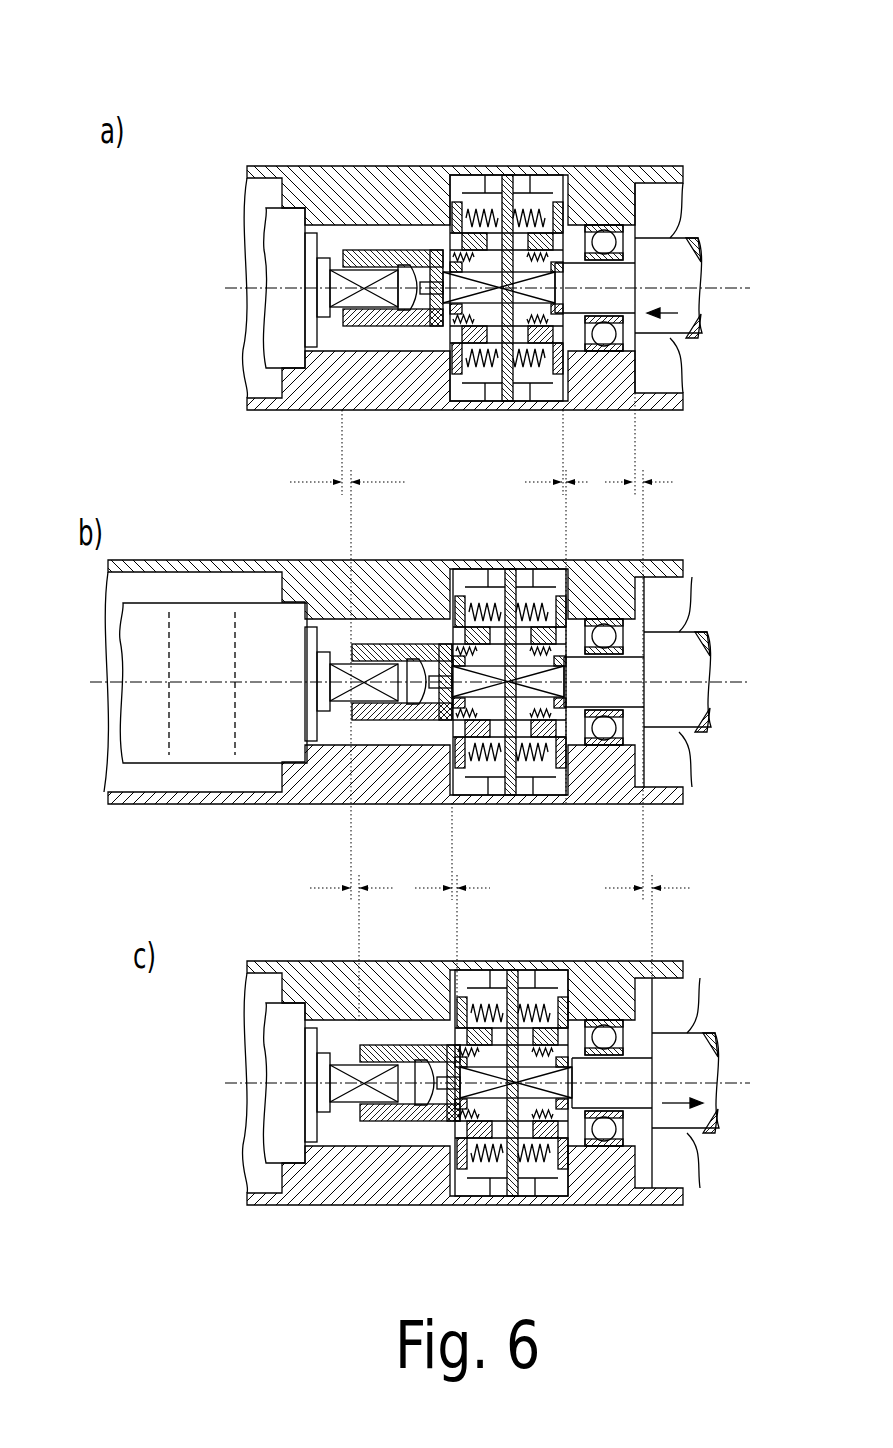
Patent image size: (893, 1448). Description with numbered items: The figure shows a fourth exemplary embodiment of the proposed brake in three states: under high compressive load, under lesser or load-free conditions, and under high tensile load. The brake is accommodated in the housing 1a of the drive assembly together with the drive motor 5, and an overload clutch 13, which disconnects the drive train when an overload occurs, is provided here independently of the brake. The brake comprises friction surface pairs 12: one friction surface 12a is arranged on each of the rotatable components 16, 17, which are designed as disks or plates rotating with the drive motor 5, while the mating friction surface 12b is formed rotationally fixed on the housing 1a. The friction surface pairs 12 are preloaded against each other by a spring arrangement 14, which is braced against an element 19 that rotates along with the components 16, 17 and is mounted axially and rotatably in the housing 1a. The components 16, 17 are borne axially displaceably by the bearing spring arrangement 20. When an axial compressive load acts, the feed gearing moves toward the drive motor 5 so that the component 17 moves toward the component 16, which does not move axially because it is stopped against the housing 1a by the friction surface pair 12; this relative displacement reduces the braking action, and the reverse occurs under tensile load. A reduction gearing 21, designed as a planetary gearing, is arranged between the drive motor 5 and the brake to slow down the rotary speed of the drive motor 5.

The housing 1a is at (297, 168).
The drive motor 5 is at (142, 658).
The friction surface pair 12 is at (445, 170).
The friction surface 12a is at (460, 170).
The mating friction surface 12b is at (412, 170).
The overload clutch 13 is at (283, 252).
The spring arrangement 14 is at (515, 400).
The rotatable component 16 is at (333, 170).
The rotatable component 17 is at (543, 170).
The element 19 is at (499, 170).
The bearing spring arrangement 20 is at (500, 595).
The reduction gearing 21 is at (205, 742).